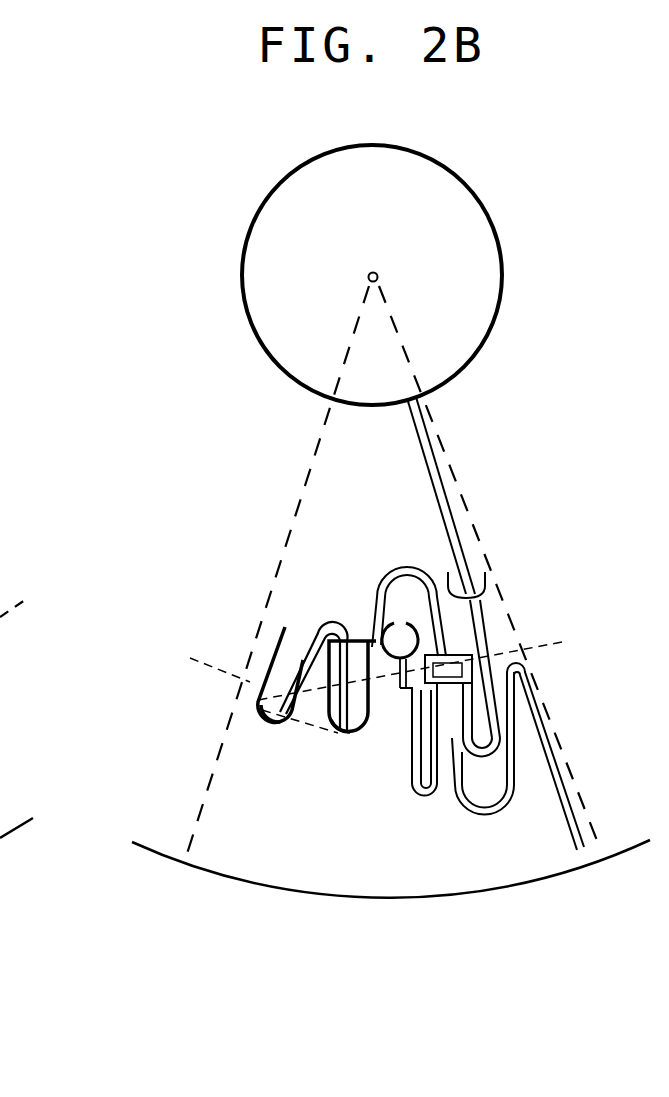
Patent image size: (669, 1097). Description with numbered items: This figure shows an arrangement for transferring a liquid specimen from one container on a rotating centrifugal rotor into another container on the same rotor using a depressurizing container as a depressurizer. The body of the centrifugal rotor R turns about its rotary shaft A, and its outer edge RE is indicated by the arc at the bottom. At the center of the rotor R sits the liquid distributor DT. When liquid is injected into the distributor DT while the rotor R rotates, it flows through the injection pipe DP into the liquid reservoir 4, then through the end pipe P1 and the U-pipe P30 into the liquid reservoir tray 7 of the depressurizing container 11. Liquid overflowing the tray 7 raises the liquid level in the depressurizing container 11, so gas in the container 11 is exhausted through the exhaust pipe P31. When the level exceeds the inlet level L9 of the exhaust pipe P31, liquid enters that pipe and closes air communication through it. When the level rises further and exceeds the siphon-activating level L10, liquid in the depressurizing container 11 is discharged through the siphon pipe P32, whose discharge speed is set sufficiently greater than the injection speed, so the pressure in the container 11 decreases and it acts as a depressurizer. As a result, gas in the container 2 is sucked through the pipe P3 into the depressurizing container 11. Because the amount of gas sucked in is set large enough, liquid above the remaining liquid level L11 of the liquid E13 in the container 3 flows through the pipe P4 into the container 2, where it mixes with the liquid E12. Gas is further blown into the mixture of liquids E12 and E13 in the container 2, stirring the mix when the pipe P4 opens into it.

The liquid distributor DT is at (258, 361).
The rotary shaft A is at (393, 286).
The centrifugal rotor R is at (393, 481).
The injection pipe DP is at (446, 446).
The liquid reservoir 4 is at (496, 566).
The end pipe P1 is at (491, 607).
The U-pipe P30 is at (514, 737).
The depressurizing container 11 is at (479, 812).
The siphon pipe P32 is at (575, 770).
The siphon-activating level L10 is at (572, 638).
The pipe P3 is at (400, 556).
The pipe P4 is at (330, 613).
The container 3 is at (264, 735).
The liquid E13 is at (253, 708).
The container 2 is at (347, 748).
The liquid E12 is at (338, 735).
The remaining liquid level L11 is at (303, 738).
The inlet level L9 is at (389, 709).
The exhaust pipe P31 is at (414, 811).
The liquid reservoir tray 7 is at (448, 694).
The outer edge RE is at (131, 861).